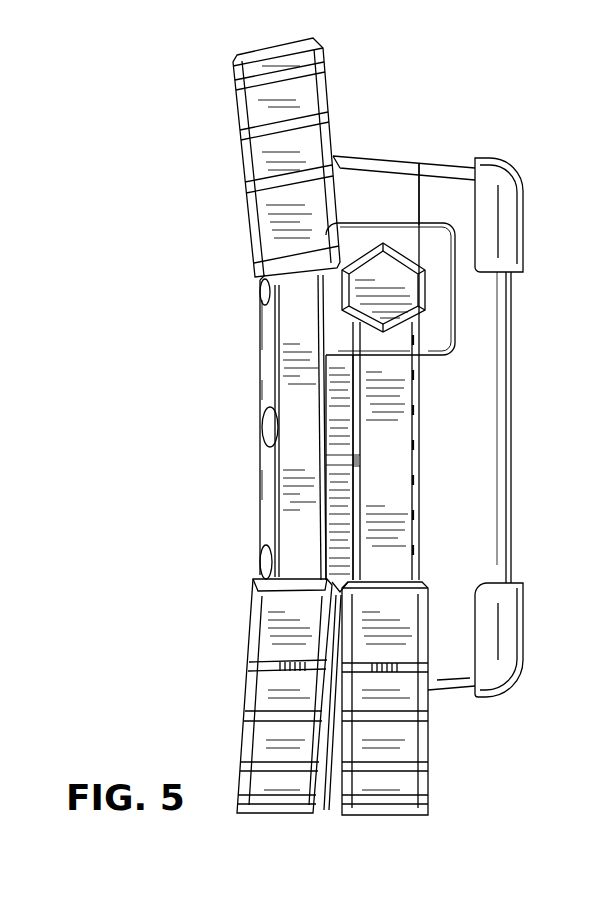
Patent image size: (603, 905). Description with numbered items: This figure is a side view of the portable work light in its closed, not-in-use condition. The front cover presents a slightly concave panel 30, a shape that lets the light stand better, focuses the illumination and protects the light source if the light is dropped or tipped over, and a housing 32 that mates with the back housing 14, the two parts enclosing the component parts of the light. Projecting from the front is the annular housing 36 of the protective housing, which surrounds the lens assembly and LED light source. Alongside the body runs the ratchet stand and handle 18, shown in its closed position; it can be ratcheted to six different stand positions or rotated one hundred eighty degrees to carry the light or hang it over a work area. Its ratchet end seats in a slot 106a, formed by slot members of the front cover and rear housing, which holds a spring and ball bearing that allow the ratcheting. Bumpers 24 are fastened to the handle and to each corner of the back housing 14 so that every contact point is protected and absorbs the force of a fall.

The back housing 14 is at (443, 173).
The ratchet stand and handle 18 is at (388, 440).
The bumpers 24 is at (265, 105).
The slightly concave panel 30 is at (300, 368).
The housing 32 is at (357, 180).
The annular housing 36 is at (267, 327).
The slot 106a is at (390, 335).